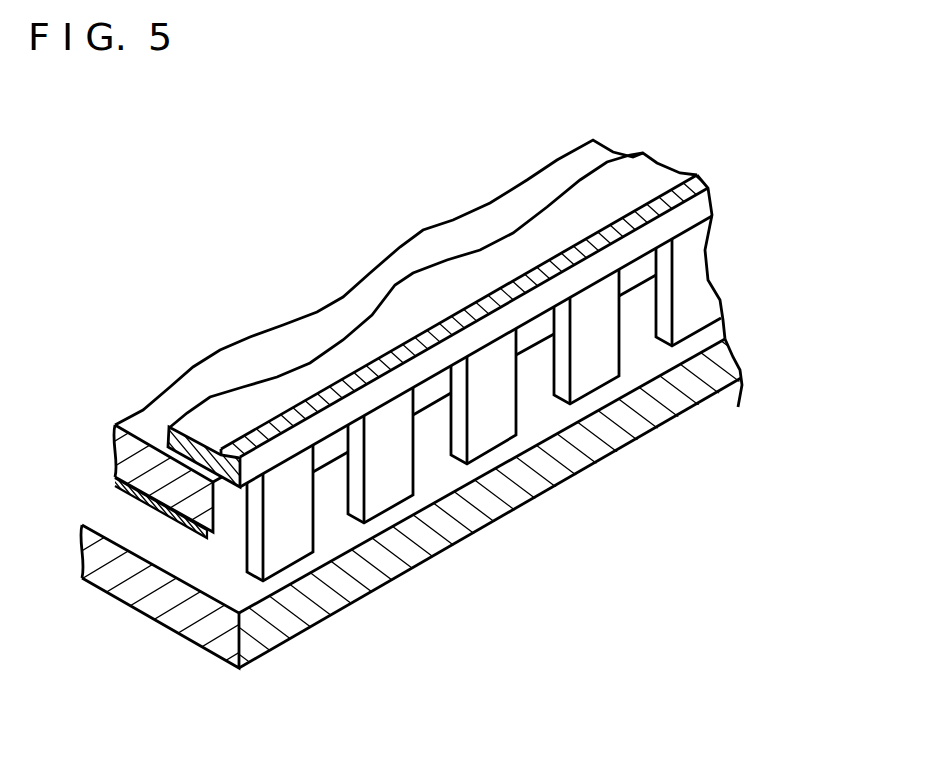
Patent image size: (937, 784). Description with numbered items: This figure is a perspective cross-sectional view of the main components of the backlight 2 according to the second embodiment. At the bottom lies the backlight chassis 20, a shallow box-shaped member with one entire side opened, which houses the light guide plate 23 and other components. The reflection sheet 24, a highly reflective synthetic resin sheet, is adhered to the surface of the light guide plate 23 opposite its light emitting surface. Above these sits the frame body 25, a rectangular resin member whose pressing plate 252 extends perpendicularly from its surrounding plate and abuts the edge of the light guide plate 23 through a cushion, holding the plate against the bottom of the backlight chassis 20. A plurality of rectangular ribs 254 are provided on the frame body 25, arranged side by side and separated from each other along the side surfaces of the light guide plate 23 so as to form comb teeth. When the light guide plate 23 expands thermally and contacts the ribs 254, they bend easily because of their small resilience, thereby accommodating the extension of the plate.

The backlight 2 is at (399, 392).
The backlight chassis 20 is at (204, 640).
The light guide plate 23 is at (163, 490).
The reflection sheet 24 is at (172, 512).
The frame body 25 is at (422, 392).
The pressing plate 252 is at (275, 388).
The ribs 254 is at (288, 548).